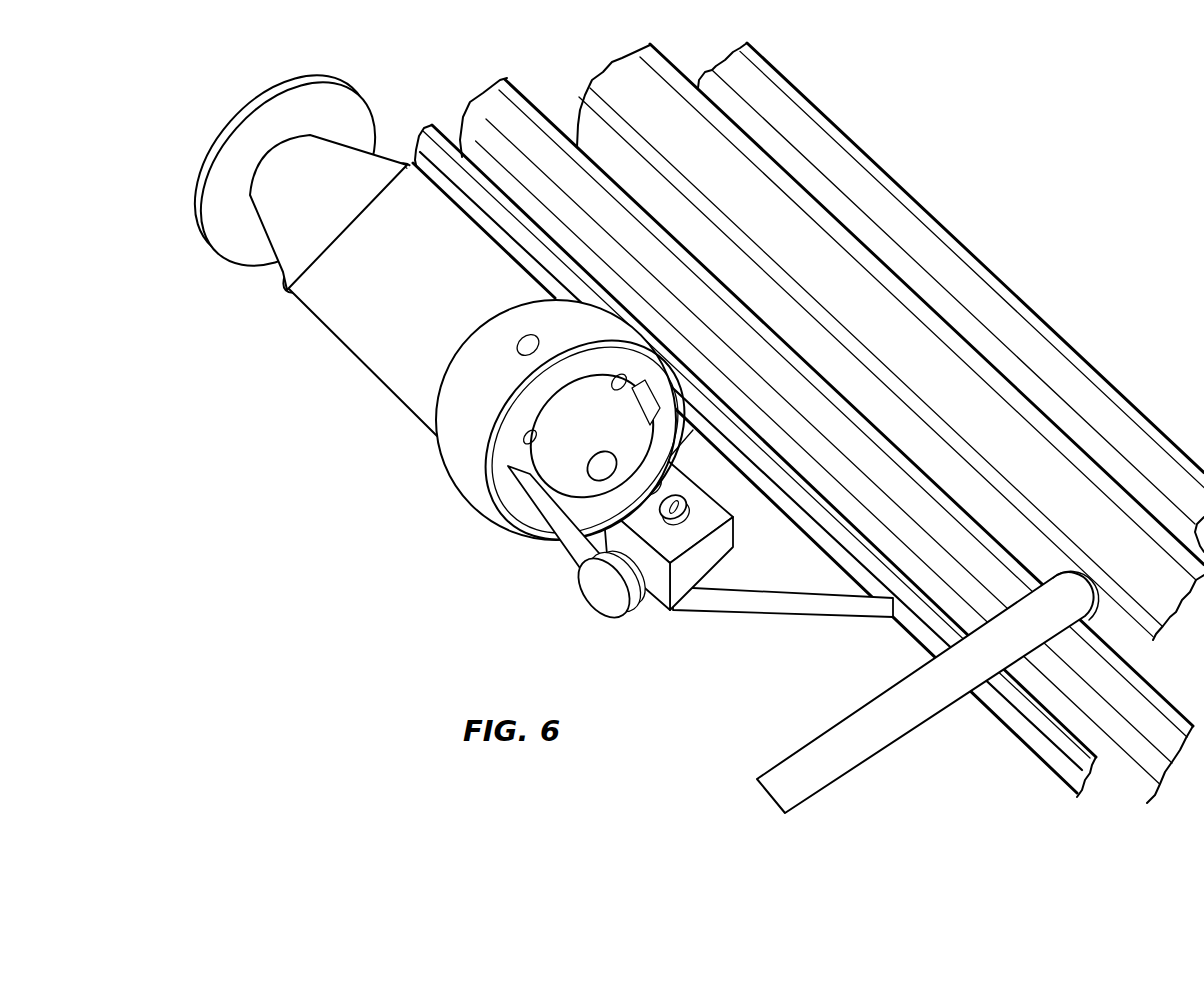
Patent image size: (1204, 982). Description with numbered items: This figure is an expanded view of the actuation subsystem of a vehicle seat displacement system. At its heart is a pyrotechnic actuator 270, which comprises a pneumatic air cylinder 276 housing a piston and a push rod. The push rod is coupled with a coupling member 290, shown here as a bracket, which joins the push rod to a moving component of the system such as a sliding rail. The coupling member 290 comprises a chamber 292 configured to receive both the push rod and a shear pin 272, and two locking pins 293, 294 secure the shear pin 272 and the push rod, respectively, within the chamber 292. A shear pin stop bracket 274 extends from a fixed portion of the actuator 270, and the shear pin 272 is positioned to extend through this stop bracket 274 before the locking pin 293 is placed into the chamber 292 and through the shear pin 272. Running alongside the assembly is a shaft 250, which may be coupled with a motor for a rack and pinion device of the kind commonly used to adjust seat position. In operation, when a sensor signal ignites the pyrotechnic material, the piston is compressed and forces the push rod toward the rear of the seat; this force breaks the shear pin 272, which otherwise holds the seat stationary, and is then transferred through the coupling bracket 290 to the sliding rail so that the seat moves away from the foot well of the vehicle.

The shaft 250 is at (888, 744).
The pyrotechnic actuator 270 is at (442, 310).
The shear pin 272 is at (601, 600).
The shear pin stop bracket 274 is at (556, 532).
The pneumatic air cylinder 276 is at (413, 388).
The coupling member 290 is at (822, 630).
The chamber 292 is at (720, 550).
The locking pin 293 is at (689, 522).
The locking pin 294 is at (636, 481).